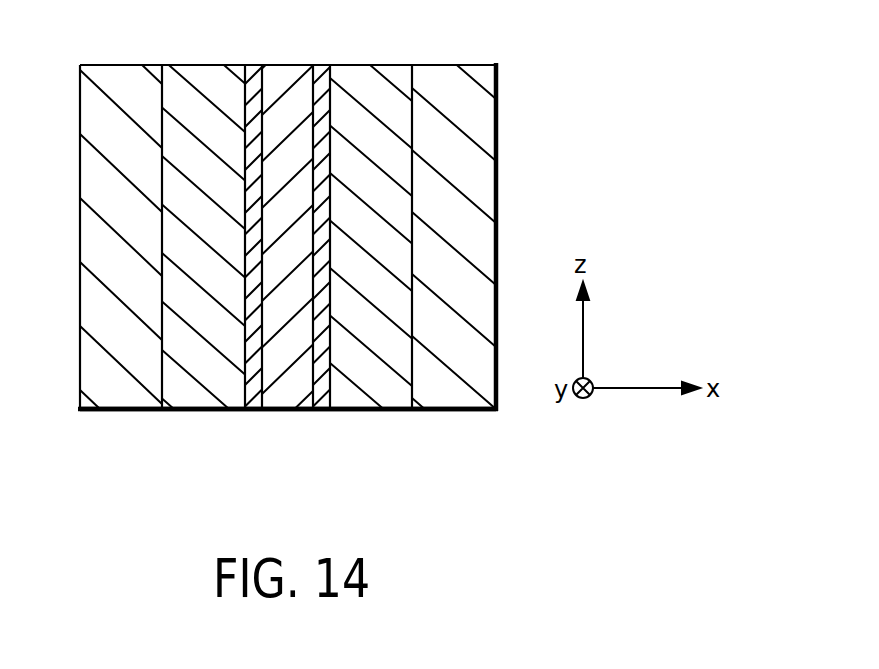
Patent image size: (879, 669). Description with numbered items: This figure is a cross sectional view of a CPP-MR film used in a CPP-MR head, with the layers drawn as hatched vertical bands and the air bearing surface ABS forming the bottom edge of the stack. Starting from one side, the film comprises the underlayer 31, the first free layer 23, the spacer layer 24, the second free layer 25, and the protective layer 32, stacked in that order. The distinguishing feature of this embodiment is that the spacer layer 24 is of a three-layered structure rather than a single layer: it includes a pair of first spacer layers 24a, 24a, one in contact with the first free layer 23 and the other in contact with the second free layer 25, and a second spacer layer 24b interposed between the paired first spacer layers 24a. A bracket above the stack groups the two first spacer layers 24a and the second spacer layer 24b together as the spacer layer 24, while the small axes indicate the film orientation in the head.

The first free layer 23 is at (378, 72).
The spacer layer 24 is at (303, 254).
The first spacer layers 24a is at (252, 400).
The second spacer layer 24b is at (283, 404).
The second free layer 25 is at (212, 72).
The underlayer 31 is at (485, 182).
The protective layer 32 is at (86, 195).
The air bearing surface ABS is at (108, 413).